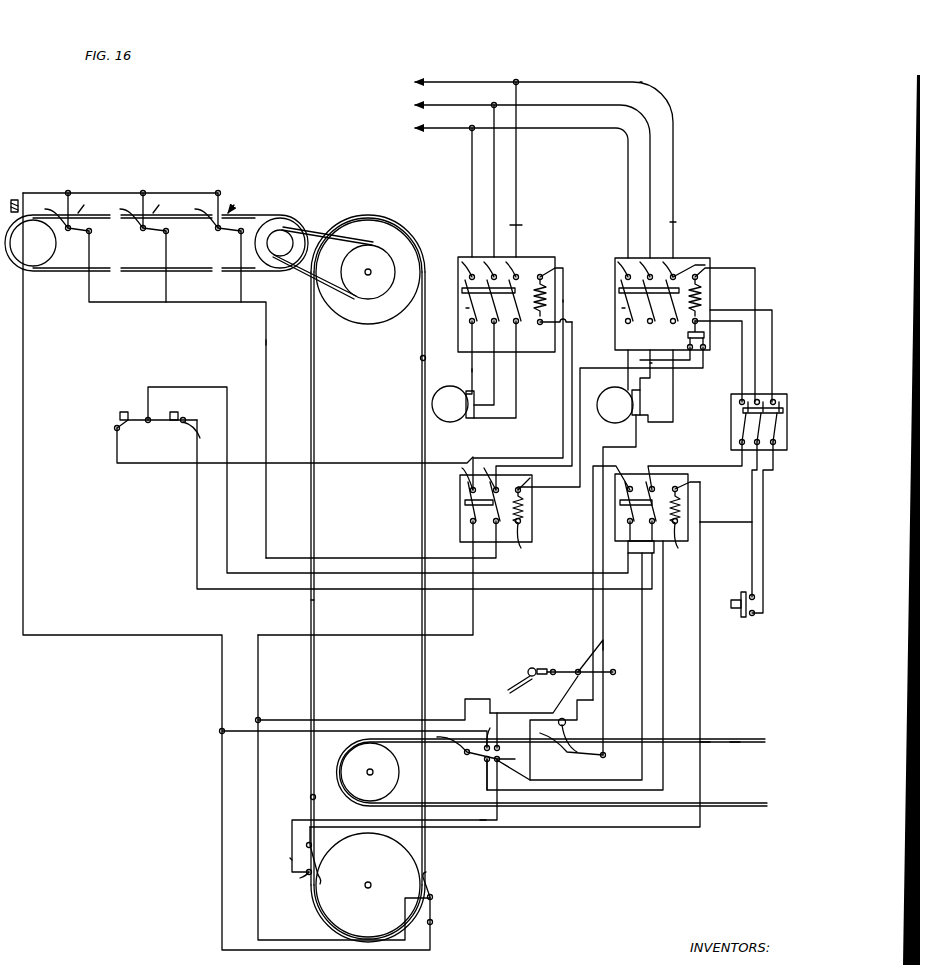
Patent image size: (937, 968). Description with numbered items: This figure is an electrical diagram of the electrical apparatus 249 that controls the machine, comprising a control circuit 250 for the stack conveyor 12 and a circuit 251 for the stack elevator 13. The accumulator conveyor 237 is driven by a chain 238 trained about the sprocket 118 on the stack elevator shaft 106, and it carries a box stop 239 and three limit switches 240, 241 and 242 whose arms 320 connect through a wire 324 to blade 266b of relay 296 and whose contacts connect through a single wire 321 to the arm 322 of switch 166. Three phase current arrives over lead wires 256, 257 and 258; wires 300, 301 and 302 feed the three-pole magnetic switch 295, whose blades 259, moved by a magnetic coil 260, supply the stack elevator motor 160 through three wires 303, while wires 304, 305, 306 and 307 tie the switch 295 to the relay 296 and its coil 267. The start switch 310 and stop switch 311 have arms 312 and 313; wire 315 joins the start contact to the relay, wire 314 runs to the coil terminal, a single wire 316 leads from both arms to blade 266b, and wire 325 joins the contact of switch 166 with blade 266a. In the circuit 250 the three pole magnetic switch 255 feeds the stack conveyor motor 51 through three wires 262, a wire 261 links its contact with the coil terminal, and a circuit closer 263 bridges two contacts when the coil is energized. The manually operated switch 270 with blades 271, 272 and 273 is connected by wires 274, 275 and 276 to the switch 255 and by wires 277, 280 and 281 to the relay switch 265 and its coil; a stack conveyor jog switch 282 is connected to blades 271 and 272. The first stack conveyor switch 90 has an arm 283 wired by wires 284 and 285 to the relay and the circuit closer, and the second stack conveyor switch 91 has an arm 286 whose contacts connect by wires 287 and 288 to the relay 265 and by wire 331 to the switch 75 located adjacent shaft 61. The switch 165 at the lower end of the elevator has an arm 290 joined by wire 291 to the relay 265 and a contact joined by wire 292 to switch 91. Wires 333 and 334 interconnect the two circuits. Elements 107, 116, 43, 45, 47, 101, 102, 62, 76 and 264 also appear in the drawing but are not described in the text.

The box stop 239 is at (15, 200).
The arms 320 is at (68, 198).
The accumulator conveyor 237 is at (263, 214).
The chain 238 is at (312, 236).
The sprocket 118 is at (367, 247).
The conveyor belt 107 is at (392, 240).
The stack elevator shaft 106 is at (366, 276).
The limit switch 240 is at (80, 236).
The limit switch 241 is at (154, 236).
The limit switch 242 is at (228, 236).
The wire 324 is at (266, 343).
The wire 321 is at (24, 372).
The start switch 310 is at (106, 420).
The stop switch 311 is at (190, 418).
The arm 312 is at (146, 423).
The arm 313 is at (163, 422).
The wire 315 is at (160, 464).
The wire 314 is at (197, 520).
The wire 316 is at (228, 522).
The stack elevator 13 is at (308, 604).
The conveyor chain 116 is at (421, 358).
The stack elevator motor 160 is at (432, 404).
The wires 303 is at (494, 375).
The wire 304 is at (535, 340).
The wire 305 is at (572, 392).
The wire 306 is at (566, 409).
The wire 307 is at (580, 427).
The relay switch 296 is at (500, 474).
The blade 266a is at (470, 506).
The blade 266b is at (484, 518).
The magnetic coil 267 is at (524, 503).
The electrical apparatus 249 is at (605, 74).
The lead wire 256 is at (560, 76).
The lead wire 257 is at (560, 101).
The lead wire 258 is at (560, 124).
The wire 300 is at (472, 158).
The wire 301 is at (494, 170).
The wire 302 is at (516, 183).
The stack elevator control circuit 251 is at (524, 218).
The three-pole magnetic switch 295 is at (542, 254).
The blades 259 is at (484, 308).
The magnetic coil 260 is at (545, 296).
The stack conveyor control circuit 250 is at (684, 214).
The three pole magnetic switch 255 is at (688, 254).
The conductor 264 is at (690, 264).
The wire 274 is at (756, 264).
The wire 275 is at (745, 303).
The wire 276 is at (772, 322).
The wire 261 is at (660, 335).
The wires 262 is at (680, 368).
The circuit closer 263 is at (706, 337).
The stack conveyor motor 51 is at (622, 394).
The three pole manually operated switch 270 is at (730, 407).
The blade 271 is at (744, 418).
The blade 272 is at (760, 426).
The blade 273 is at (776, 432).
The wire 277 is at (686, 478).
The wire 280 is at (706, 484).
The wire 281 is at (740, 524).
The relay switch 265 is at (692, 538).
The stack conveyor jog switch 282 is at (743, 618).
The wire 284 is at (593, 603).
The wire 285 is at (603, 636).
The switch 75 is at (546, 663).
The shaft 61 is at (532, 668).
The lever 62 is at (512, 682).
The switch arm 76 is at (540, 676).
The wire 331 is at (522, 710).
The wire 288 is at (648, 694).
The stack conveyor 12 is at (716, 740).
The conveyor belt 43 is at (736, 746).
The arm 283 is at (566, 752).
The first stack conveyor switch 90 is at (596, 757).
The arm 286 is at (455, 750).
The second stack conveyor switch 91 is at (470, 762).
The wire 287 is at (532, 828).
The wire 333 is at (355, 720).
The wire 334 is at (399, 731).
The pulley 47 is at (356, 758).
The shaft 45 is at (366, 776).
The wire 325 is at (258, 800).
The switch 165 is at (304, 854).
The wire 292 is at (290, 860).
The arm 290 is at (318, 876).
The shaft 101 is at (368, 890).
The pulley 102 is at (338, 916).
The switch 166 is at (436, 908).
The arm 322 is at (432, 922).
The wire 291 is at (480, 822).